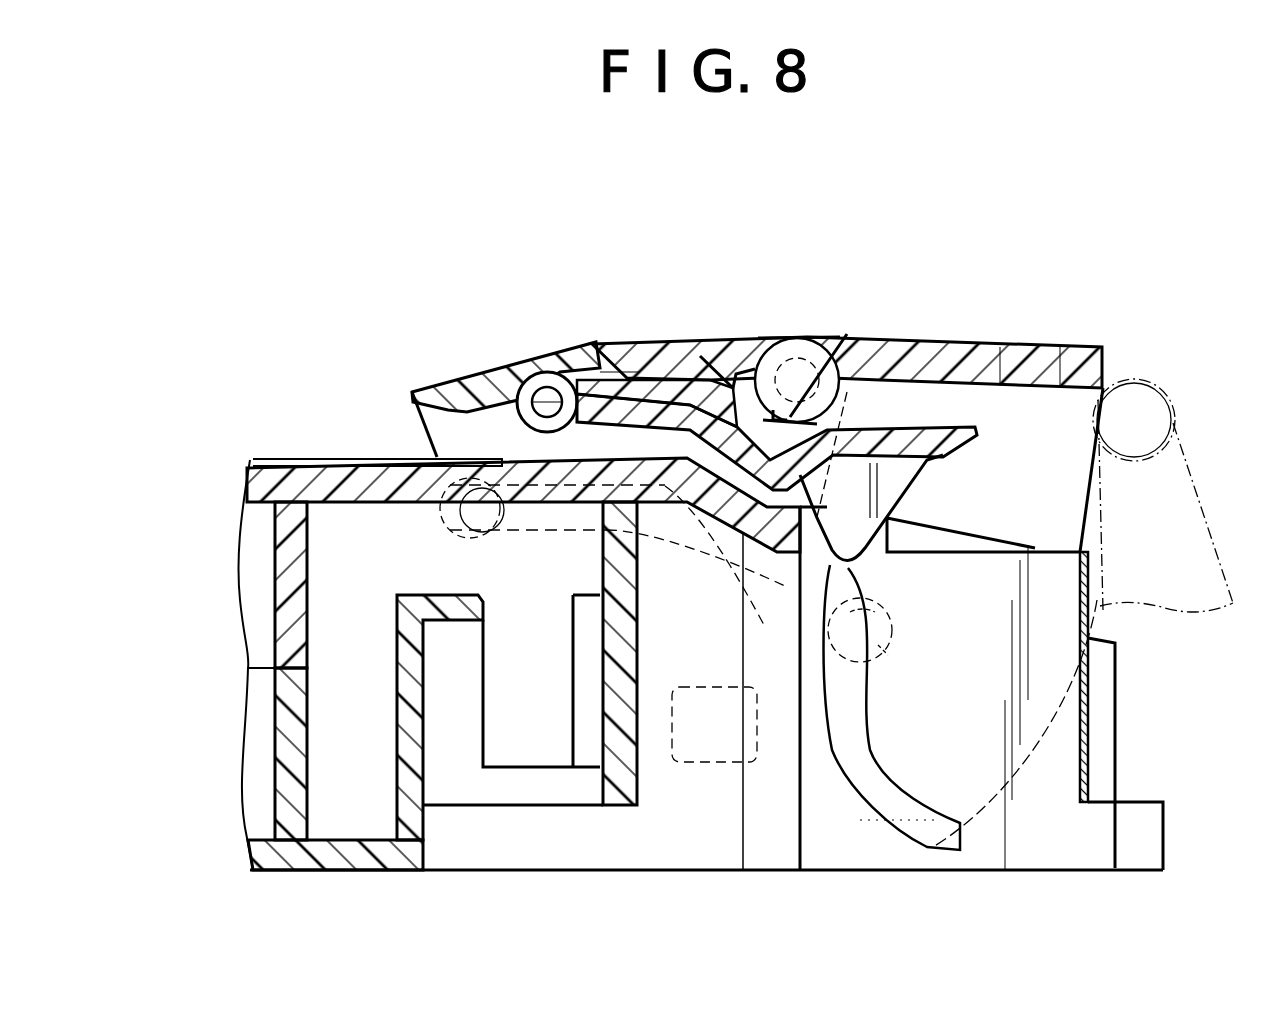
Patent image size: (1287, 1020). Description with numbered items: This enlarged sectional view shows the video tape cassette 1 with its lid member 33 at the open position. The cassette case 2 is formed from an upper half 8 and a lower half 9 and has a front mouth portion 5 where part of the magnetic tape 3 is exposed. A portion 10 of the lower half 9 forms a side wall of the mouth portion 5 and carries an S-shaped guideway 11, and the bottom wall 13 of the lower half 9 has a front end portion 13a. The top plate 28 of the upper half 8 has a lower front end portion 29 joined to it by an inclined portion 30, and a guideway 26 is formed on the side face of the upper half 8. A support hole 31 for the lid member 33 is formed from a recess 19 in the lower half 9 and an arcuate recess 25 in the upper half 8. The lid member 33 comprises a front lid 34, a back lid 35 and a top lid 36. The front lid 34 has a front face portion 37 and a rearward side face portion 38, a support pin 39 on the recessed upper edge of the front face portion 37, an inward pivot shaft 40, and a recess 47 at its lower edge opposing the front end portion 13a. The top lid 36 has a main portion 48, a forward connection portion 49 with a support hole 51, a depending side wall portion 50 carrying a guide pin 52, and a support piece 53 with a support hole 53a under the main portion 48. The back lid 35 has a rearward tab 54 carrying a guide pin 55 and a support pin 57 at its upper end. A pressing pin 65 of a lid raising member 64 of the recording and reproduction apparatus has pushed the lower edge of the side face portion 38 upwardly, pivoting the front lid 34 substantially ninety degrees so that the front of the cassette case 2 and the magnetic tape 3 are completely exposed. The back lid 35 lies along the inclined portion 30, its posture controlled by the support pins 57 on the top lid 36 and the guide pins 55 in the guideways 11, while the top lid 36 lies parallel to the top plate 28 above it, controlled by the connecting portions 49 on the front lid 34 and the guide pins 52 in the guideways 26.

The video tape cassette 1 is at (1083, 228).
The cassette case 2 is at (219, 665).
The magnetic tape 3 is at (1090, 727).
The mouth portion 5 is at (690, 793).
The upper half 8 is at (252, 617).
The lower half 9 is at (240, 769).
The mouth portion side wall 10 is at (1047, 690).
The guideway 11 is at (888, 812).
The bottom wall 13 is at (345, 845).
The front end portion of bottom wall 13a is at (1150, 826).
The recess 19 is at (886, 650).
The arcuate recess 25 is at (872, 612).
The guideway 26 is at (554, 530).
The top plate 28 is at (355, 466).
The front end portion of top plate 29 is at (947, 540).
The inclined portion 30 is at (710, 500).
The support hole 31 is at (868, 684).
The lid member 33 is at (839, 294).
The front lid 34 is at (880, 338).
The back lid 35 is at (690, 396).
The top lid 36 is at (657, 316).
The front face portion 37 is at (952, 348).
The side face portion 38 is at (1088, 378).
The support pin 39 is at (772, 408).
The pivot shaft 40 is at (893, 632).
The recess 47 is at (1042, 367).
The main portion 48 is at (538, 385).
The connection portion 49 is at (770, 345).
The side wall portion 50 is at (605, 378).
The support hole 51 is at (848, 393).
The guide pin 52 is at (455, 520).
The support piece 53 is at (517, 427).
The support hole 53a is at (543, 406).
The tab 54 is at (922, 463).
The guide pin 55 is at (885, 498).
The support pin 57 is at (530, 440).
The lid raising member 64 is at (1205, 495).
The pressing pin 65 is at (1175, 418).